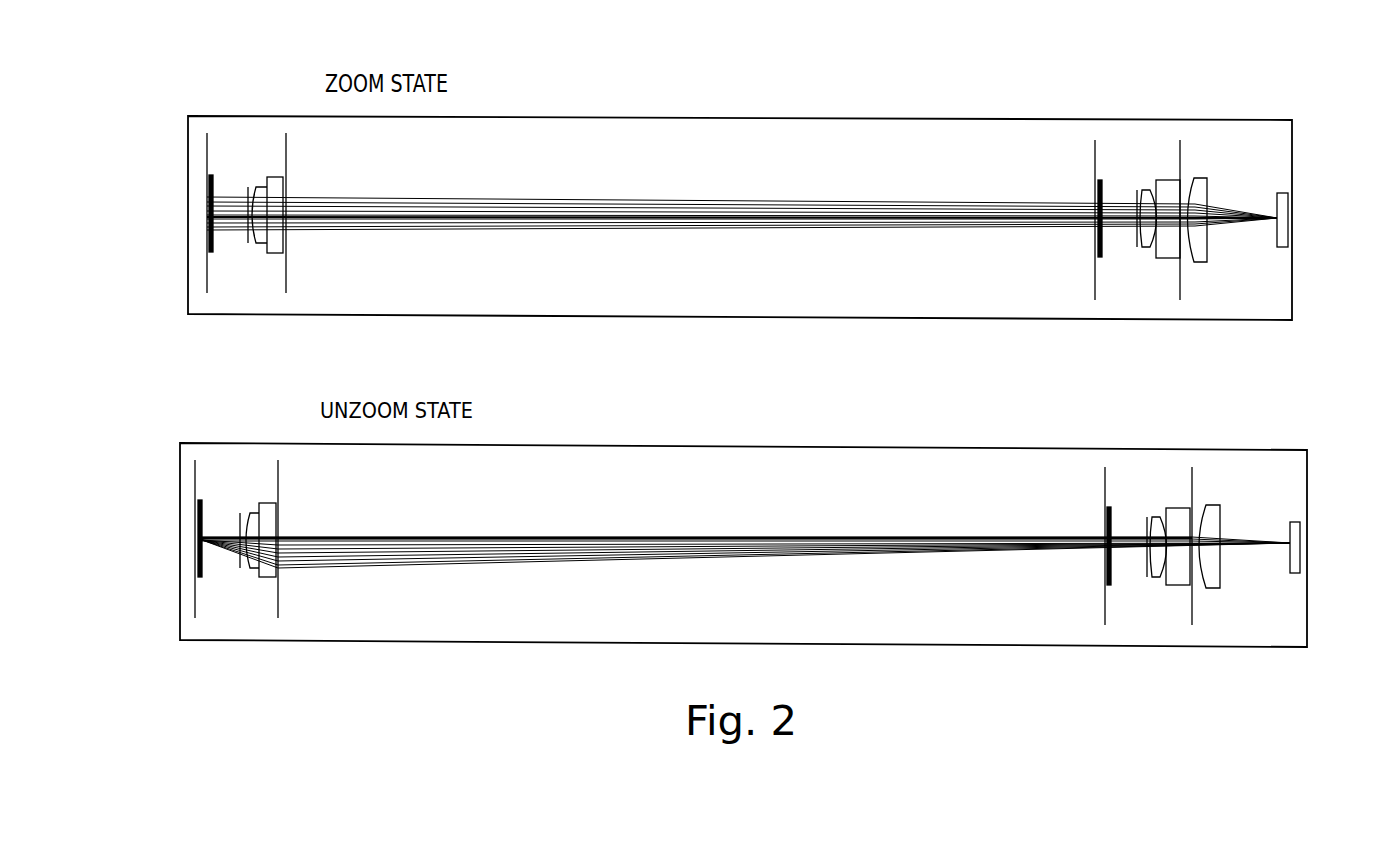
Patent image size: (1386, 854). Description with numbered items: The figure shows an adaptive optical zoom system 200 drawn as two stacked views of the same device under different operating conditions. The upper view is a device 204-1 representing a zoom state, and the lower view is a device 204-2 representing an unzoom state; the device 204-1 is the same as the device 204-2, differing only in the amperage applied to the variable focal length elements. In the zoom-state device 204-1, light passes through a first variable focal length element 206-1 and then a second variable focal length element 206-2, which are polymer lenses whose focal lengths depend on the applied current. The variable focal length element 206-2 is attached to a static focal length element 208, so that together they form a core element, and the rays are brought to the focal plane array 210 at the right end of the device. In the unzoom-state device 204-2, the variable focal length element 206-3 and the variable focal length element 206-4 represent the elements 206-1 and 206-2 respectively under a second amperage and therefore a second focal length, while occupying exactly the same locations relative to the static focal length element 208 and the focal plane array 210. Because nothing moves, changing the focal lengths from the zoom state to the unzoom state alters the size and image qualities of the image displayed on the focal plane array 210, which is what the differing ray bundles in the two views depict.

The adaptive optical zoom system 200 is at (1217, 64).
The device 204-1 is at (188, 294).
The device 204-2 is at (180, 457).
The variable focal length element 206-1 is at (275, 177).
The variable focal length element 206-2 is at (1164, 180).
The variable focal length element 206-3 is at (268, 503).
The variable focal length element 206-4 is at (1173, 508).
The static focal length element 208 is at (1208, 254).
The focal plane array 210 is at (1288, 228).